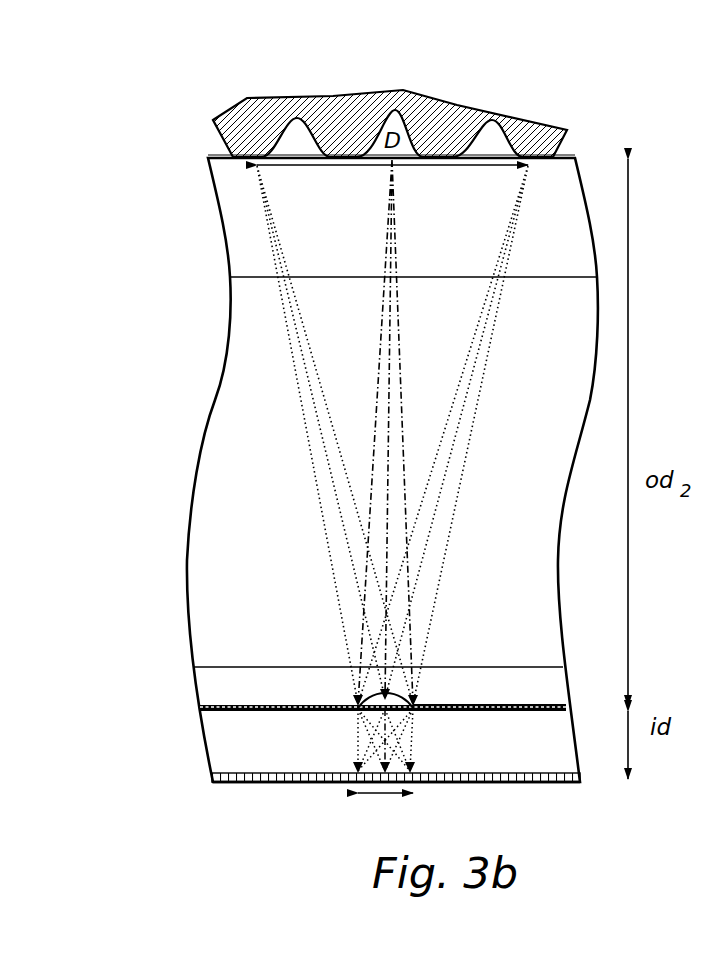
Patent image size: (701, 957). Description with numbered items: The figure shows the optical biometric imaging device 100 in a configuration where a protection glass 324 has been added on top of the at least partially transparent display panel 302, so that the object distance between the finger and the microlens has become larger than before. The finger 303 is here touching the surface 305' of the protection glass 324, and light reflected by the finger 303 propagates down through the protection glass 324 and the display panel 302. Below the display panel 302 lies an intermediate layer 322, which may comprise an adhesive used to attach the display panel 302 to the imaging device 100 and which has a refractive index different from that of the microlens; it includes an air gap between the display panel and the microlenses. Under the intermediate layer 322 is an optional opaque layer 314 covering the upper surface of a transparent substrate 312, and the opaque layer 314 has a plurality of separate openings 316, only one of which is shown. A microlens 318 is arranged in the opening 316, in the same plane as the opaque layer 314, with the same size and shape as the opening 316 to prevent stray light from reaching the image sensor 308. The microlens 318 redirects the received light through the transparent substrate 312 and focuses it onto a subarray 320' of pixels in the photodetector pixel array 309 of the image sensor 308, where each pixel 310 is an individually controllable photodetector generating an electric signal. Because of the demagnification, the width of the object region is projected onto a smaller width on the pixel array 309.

The optical biometric imaging device 100 is at (96, 730).
The finger 303 is at (299, 84).
The surface of the protection glass 305' is at (349, 110).
The protection glass 324 is at (211, 204).
The display panel 302 is at (197, 490).
The photodetector pixel array 309 is at (276, 768).
The transparent substrate 312 is at (197, 748).
The intermediate layer 322 is at (197, 692).
The opaque layer 314 is at (500, 702).
The microlens 318 is at (372, 695).
The opening 316 is at (363, 716).
The image sensor 308 is at (209, 778).
The pixel 310 is at (538, 776).
The subarray of pixels 320' is at (355, 841).